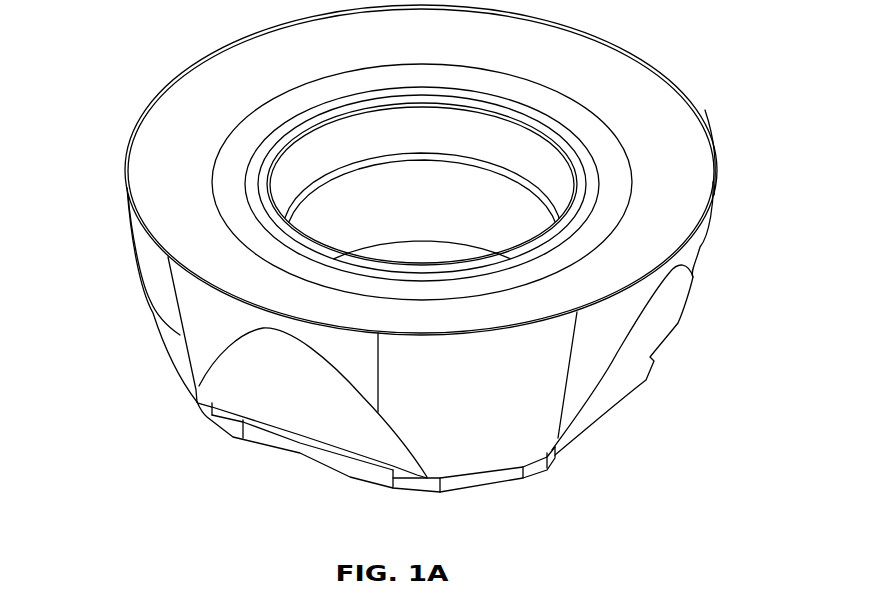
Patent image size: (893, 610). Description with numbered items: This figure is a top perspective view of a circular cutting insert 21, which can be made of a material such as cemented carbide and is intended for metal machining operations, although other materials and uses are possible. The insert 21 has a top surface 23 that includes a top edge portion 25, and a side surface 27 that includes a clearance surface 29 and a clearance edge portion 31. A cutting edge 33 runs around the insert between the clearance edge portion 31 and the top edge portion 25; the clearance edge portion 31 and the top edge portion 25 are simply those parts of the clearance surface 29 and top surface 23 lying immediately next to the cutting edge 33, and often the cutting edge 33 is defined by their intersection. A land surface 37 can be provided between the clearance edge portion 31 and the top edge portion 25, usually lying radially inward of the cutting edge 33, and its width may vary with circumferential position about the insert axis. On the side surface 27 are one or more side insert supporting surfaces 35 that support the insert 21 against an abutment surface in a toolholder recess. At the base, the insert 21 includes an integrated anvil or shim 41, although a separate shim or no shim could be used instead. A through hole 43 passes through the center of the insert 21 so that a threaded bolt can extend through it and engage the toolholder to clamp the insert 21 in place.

The cutting insert 21 is at (737, 80).
The top surface 23 is at (160, 123).
The top edge portion 25 is at (150, 150).
The side surface 27 is at (138, 377).
The clearance surface 29 is at (195, 318).
The clearance edge portion 31 is at (225, 298).
The cutting edge 33 is at (190, 270).
The side insert supporting surface 35 is at (283, 392).
The land surface 37 is at (725, 176).
The integrated anvil or shim 41 is at (543, 467).
The through hole 43 is at (450, 205).